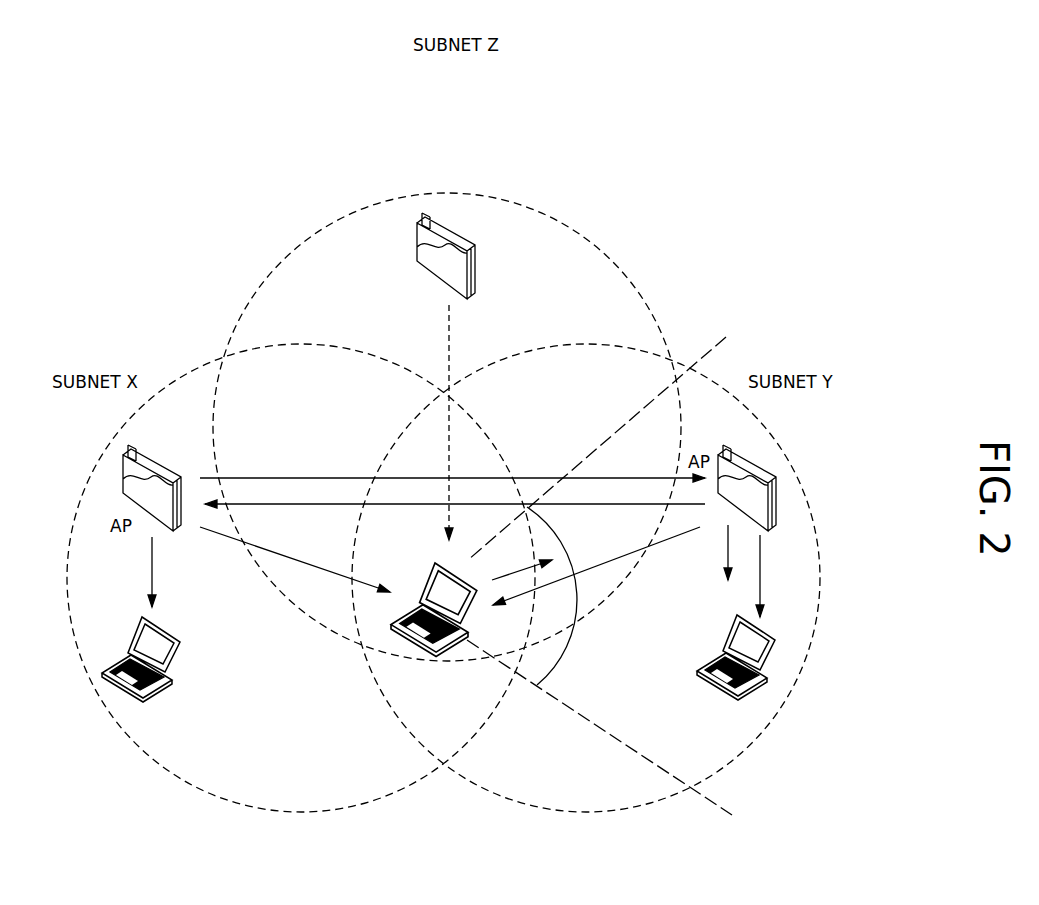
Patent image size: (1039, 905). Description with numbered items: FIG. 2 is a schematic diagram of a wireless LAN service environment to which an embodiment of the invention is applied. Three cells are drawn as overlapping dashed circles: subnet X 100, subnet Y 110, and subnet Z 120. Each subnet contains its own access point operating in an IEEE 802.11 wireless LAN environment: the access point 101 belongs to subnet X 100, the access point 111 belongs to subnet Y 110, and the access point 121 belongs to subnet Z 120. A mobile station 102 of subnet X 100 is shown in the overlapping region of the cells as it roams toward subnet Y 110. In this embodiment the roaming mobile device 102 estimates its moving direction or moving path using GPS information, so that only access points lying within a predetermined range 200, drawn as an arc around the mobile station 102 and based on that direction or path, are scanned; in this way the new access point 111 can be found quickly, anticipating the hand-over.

The subnet X 100 is at (160, 768).
The subnet Y 110 is at (735, 765).
The subnet Z 120 is at (615, 267).
The access point 101 is at (135, 494).
The access point 111 is at (772, 508).
The access point 121 is at (442, 275).
The mobile station 102 is at (431, 642).
The predetermined range 200 is at (565, 650).